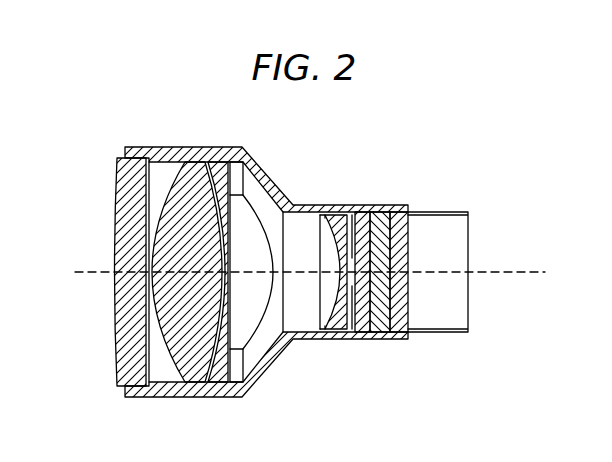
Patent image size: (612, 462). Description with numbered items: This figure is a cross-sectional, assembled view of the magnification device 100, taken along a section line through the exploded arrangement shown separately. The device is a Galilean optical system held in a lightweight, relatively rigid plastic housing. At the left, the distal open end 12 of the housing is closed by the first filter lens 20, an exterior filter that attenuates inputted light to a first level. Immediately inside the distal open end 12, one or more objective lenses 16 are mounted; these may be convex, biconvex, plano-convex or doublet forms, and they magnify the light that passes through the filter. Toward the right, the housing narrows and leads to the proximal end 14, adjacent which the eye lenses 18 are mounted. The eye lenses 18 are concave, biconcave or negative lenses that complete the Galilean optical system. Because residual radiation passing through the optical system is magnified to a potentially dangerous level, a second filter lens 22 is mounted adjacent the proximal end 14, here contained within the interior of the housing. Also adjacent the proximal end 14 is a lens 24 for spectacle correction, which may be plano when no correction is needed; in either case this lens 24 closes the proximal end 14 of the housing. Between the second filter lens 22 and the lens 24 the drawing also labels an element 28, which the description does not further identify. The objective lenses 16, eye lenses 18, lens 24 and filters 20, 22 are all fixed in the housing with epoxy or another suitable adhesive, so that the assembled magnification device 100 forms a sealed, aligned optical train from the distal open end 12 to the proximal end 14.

The magnification device 100 is at (498, 158).
The distal open end 12 is at (108, 263).
The proximal end 14 is at (487, 243).
The objective lens 16 is at (188, 382).
The eye lens 18 is at (336, 332).
The first filter lens 20 is at (125, 177).
The second filter lens 22 is at (362, 332).
The spectacle correction lens 24 is at (399, 332).
The image sensor element 28 is at (378, 226).